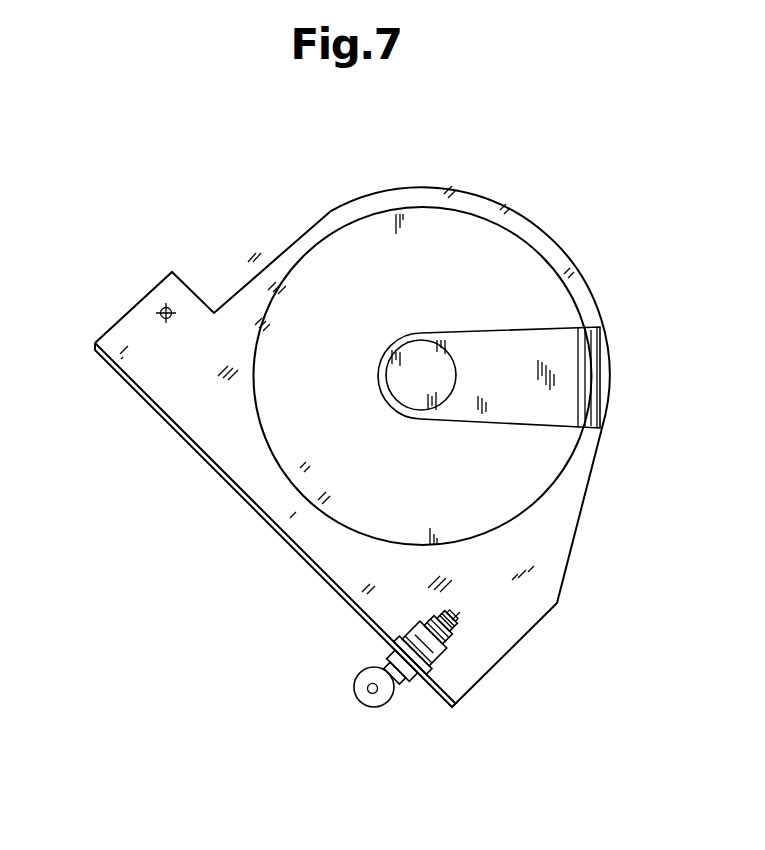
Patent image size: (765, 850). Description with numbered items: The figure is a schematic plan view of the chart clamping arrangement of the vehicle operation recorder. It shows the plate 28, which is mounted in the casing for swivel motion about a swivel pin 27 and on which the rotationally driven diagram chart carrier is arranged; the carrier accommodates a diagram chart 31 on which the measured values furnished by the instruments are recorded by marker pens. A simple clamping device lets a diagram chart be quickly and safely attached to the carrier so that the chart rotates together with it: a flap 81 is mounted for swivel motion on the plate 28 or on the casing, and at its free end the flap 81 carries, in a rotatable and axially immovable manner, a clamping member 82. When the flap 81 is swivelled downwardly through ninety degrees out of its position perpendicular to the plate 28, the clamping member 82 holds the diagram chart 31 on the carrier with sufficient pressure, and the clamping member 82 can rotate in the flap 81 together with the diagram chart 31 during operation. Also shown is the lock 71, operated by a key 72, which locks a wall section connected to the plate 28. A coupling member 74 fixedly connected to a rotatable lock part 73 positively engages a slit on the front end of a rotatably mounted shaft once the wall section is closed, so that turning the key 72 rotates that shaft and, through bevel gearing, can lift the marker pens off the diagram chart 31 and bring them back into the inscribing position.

The swivel pin 27 is at (177, 292).
The plate 28 is at (423, 189).
The diagram chart 31 is at (473, 228).
The flap 81 is at (410, 334).
The clamping member 82 is at (465, 338).
The lock 71 is at (438, 648).
The key 72 is at (385, 698).
The rotatable lock part 73 is at (449, 630).
The coupling member 74 is at (456, 612).